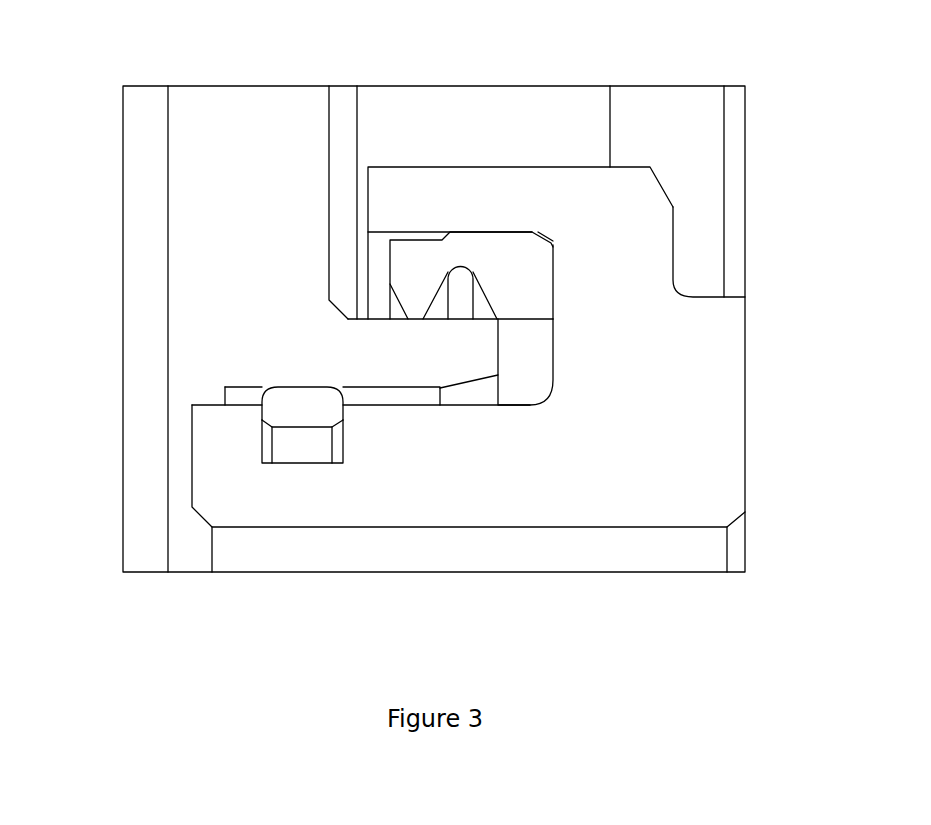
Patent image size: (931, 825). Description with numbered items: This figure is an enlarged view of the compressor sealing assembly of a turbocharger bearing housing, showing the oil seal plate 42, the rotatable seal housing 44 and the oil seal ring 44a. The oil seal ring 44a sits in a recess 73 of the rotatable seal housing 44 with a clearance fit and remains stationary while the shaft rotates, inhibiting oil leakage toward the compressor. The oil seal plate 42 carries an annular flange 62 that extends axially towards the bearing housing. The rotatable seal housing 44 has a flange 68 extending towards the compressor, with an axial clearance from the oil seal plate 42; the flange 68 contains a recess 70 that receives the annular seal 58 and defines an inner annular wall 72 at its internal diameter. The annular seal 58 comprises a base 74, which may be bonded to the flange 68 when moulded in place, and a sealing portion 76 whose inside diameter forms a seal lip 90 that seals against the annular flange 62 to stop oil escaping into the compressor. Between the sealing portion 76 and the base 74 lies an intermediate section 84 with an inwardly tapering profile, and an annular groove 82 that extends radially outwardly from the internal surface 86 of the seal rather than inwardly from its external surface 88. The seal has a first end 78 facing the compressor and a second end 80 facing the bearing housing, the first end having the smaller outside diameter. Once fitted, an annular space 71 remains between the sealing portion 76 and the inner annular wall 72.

The oil seal plate 42 is at (308, 103).
The rotatable seal housing 44 is at (713, 340).
The oil seal ring 44a is at (278, 413).
The annular seal 58 is at (517, 293).
The annular flange 62 is at (457, 363).
The flange 68 is at (495, 192).
The recess 70 is at (382, 285).
The annular space 71 is at (398, 237).
The inner annular wall 72 is at (225, 387).
The recess 73 is at (270, 453).
The base 74 is at (520, 250).
The sealing portion 76 is at (413, 293).
The first end 78 is at (380, 247).
The second end 80 is at (553, 295).
The annular groove 82 is at (460, 297).
The intermediate section 84 is at (461, 246).
The internal surface 86 is at (520, 362).
The external surface 88 is at (502, 228).
The seal lip 90 is at (417, 319).